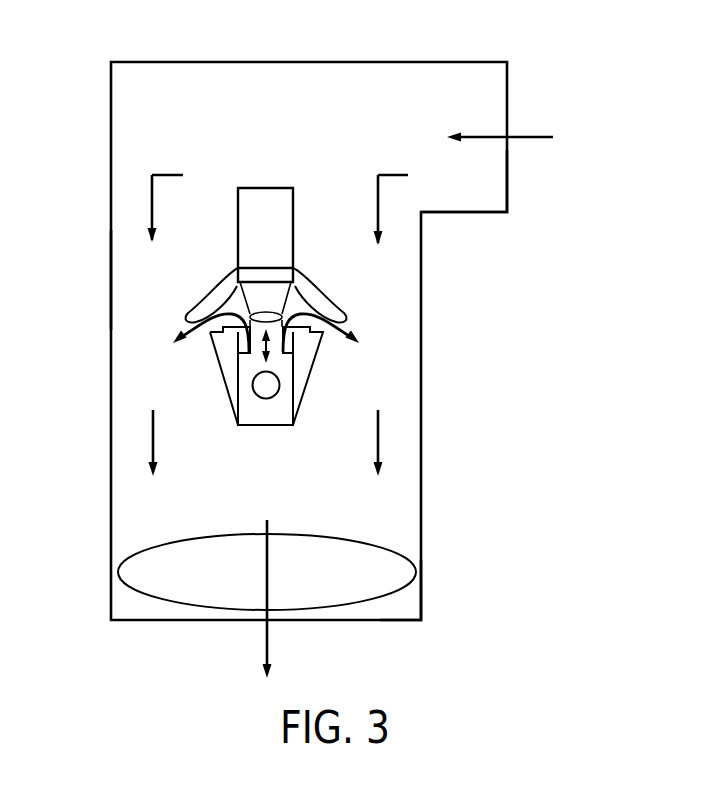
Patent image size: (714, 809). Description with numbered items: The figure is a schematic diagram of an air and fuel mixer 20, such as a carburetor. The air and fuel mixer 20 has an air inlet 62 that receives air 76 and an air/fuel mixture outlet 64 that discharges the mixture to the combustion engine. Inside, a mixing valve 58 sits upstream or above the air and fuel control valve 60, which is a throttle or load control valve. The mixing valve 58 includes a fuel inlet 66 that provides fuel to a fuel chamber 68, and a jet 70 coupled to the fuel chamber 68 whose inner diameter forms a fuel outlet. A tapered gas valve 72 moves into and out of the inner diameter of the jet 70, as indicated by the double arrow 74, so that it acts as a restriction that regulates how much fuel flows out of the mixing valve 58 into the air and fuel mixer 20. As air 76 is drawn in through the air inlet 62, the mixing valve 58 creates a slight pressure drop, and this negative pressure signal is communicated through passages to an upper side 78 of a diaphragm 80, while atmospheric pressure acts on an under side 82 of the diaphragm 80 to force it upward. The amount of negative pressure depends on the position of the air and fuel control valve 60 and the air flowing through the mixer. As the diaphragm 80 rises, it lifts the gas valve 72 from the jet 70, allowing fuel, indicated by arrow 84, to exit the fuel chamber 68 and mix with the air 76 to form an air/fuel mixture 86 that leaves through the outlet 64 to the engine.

The air and fuel mixer 20 is at (308, 62).
The mixing valve 58 is at (140, 293).
The air and fuel control valve 60 is at (340, 606).
The air inlet 62 is at (507, 175).
The air/fuel mixture outlet 64 is at (395, 621).
The fuel inlet 66 is at (285, 411).
The fuel chamber 68 is at (278, 393).
The jet 70 is at (318, 333).
The gas valve 72 is at (298, 292).
The double arrow 74 is at (264, 358).
The air 76 is at (155, 173).
The upper side of diaphragm 78 is at (207, 296).
The diaphragm 80 is at (226, 292).
The under side of diaphragm 82 is at (318, 299).
The fuel flow arrow 84 is at (193, 340).
The air/fuel mixture 86 is at (147, 437).